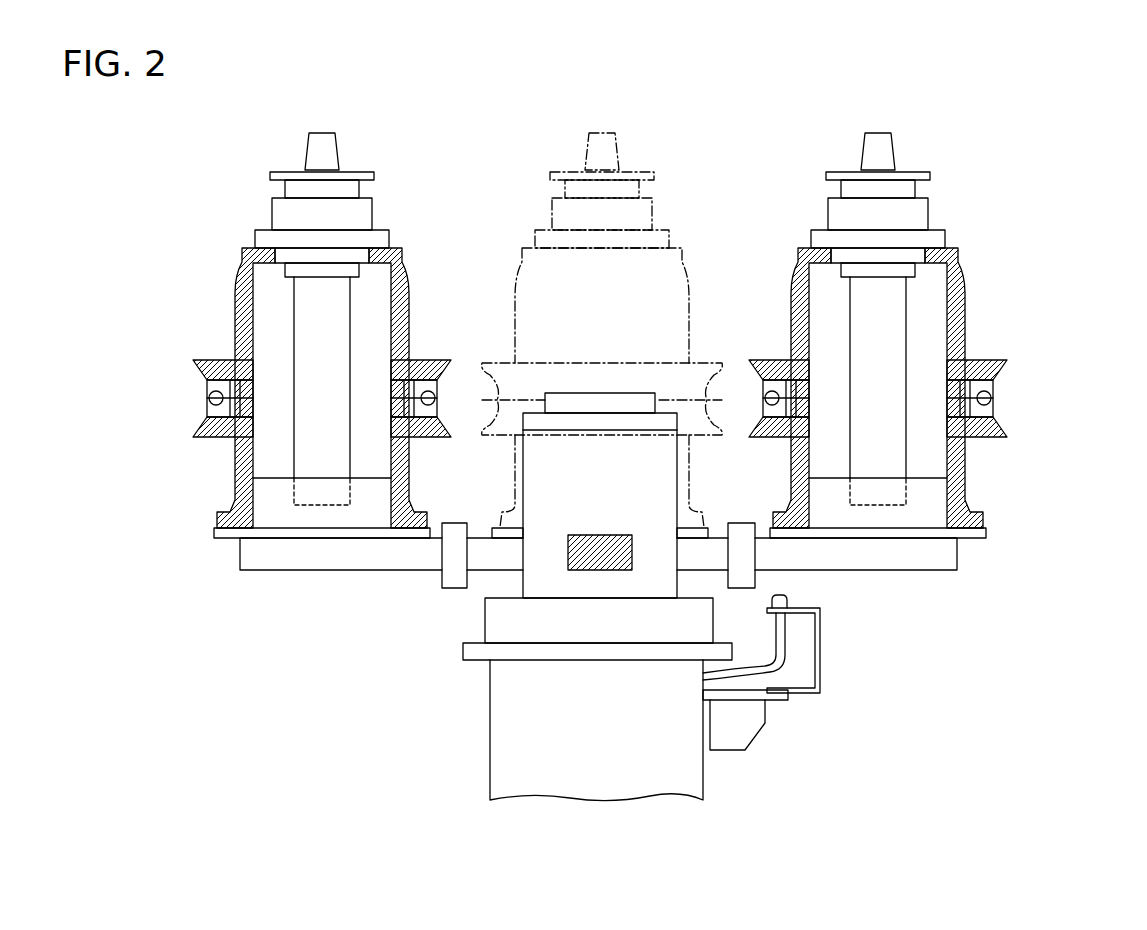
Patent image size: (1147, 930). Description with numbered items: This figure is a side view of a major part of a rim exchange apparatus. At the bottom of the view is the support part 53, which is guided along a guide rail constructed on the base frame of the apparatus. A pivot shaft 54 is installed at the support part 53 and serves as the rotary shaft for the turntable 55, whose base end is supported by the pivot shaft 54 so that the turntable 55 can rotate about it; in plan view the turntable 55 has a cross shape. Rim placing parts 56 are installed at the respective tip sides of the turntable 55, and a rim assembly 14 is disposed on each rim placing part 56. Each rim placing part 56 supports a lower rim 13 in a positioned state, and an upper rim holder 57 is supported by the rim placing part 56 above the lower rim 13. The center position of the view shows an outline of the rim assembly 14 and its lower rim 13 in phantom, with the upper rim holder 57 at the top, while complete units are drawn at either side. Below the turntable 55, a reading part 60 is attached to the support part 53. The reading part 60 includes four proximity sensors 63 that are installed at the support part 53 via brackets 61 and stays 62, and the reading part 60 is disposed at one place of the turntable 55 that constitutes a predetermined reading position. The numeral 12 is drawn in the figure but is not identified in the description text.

The upper housing portion 12 is at (236, 325).
The lower rim 13 is at (236, 480).
The rim assembly 14 is at (532, 195).
The support part 53 is at (508, 756).
The pivot shaft 54 is at (658, 463).
The turntable 55 is at (956, 558).
The rim placing part 56 is at (340, 517).
The upper rim holder 57 is at (320, 133).
The reading part 60 is at (828, 680).
The bracket 61 is at (752, 718).
The stay 62 is at (820, 642).
The proximity sensor 63 is at (787, 595).